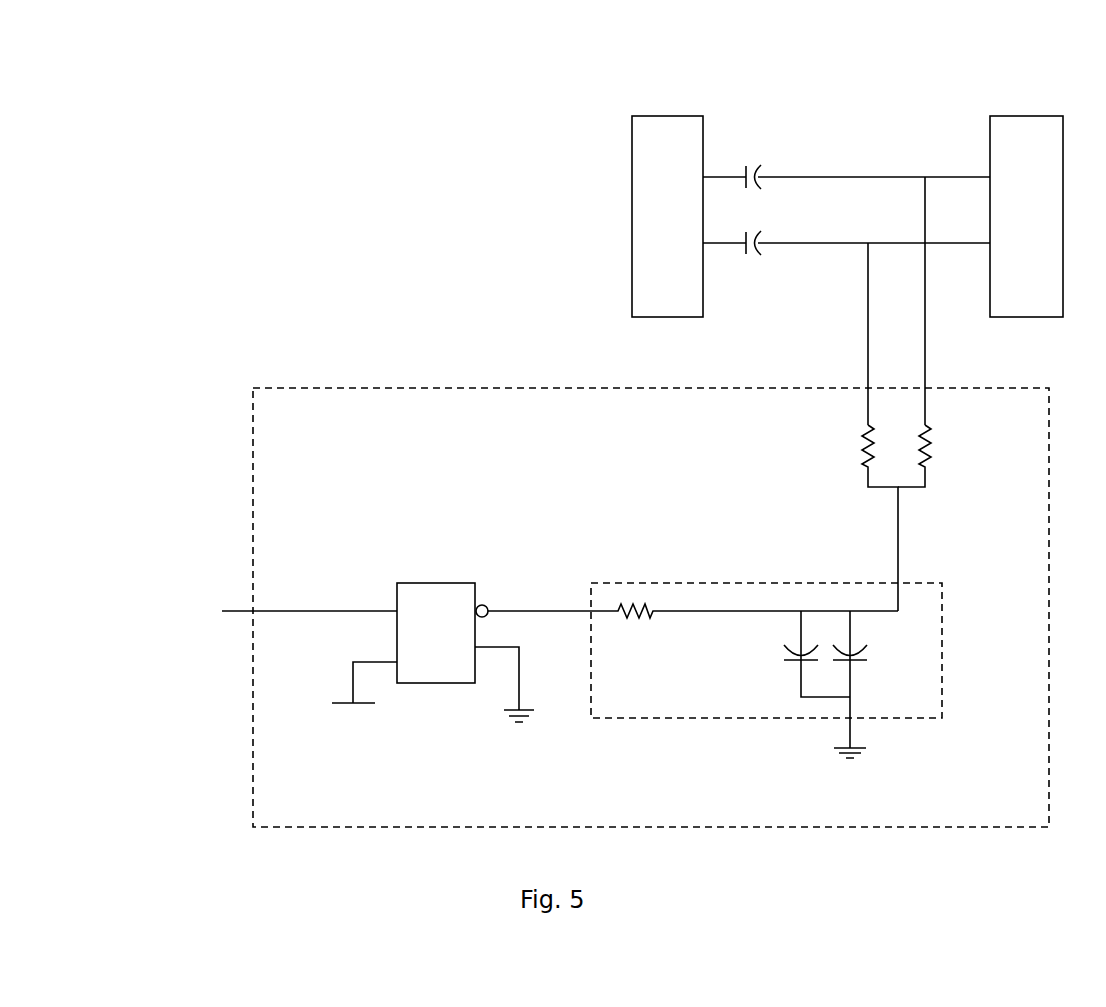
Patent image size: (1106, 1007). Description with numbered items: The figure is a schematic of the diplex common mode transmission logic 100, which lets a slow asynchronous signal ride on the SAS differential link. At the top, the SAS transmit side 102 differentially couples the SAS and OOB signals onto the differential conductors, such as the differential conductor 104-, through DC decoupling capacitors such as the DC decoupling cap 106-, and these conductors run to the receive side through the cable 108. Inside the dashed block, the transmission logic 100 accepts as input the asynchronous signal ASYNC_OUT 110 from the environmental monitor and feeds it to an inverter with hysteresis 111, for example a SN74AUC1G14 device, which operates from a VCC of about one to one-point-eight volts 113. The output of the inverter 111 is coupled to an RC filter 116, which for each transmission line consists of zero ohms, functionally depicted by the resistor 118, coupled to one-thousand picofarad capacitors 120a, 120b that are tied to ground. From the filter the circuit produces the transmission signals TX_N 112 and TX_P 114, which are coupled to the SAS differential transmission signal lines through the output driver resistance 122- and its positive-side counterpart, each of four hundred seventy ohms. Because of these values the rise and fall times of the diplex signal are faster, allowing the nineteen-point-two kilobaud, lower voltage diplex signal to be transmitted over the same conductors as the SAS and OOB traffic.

The diplex common mode transmission logic 100 is at (333, 387).
The SAS transmit side 102 is at (637, 165).
The differential conductor 104- is at (818, 240).
The DC decoupling cap 106- is at (759, 296).
The cable 108 is at (1028, 109).
The asynchronous signal ASYNC_OUT 110 is at (124, 591).
The inverter with hysteresis 111 is at (418, 582).
The transmission signal TX_N 112 is at (793, 370).
The VCC of 1-1.8V 113 is at (318, 741).
The transmission signal TX_P 114 is at (998, 370).
The RC filter 116 is at (668, 582).
The resistor 118 is at (677, 654).
The capacitor 120a is at (792, 668).
The capacitor 120b is at (863, 642).
The output driver resistance 122- is at (855, 437).